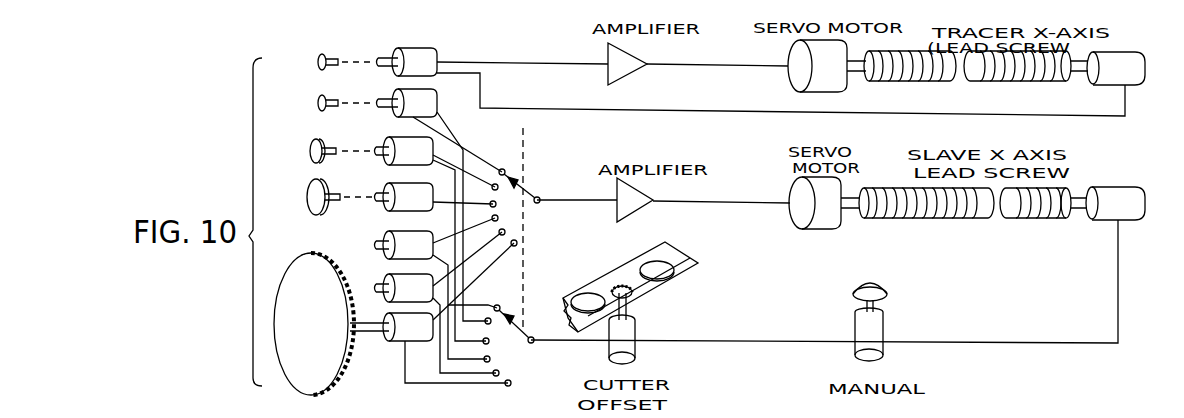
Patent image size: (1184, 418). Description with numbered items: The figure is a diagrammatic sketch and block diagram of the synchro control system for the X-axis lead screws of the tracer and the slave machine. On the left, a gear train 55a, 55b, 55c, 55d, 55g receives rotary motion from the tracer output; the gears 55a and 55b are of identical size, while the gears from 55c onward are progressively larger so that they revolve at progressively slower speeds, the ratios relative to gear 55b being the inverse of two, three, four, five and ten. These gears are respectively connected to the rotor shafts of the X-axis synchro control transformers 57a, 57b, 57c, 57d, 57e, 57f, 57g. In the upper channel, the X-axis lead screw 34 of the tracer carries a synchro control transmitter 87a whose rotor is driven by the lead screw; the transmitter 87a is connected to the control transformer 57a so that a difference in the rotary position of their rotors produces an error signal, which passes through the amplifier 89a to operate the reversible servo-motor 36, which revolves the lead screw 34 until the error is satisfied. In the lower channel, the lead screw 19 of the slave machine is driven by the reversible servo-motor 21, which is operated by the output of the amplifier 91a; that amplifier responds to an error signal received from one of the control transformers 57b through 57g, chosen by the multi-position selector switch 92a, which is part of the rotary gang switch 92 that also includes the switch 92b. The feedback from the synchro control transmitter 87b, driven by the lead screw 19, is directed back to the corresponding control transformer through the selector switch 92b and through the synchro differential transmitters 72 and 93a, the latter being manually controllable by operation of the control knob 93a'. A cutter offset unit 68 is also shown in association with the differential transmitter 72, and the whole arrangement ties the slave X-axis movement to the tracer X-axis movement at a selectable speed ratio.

The gear 55a is at (317, 62).
The gear 55b is at (318, 104).
The gear 55c is at (317, 150).
The gear 55d is at (315, 196).
The gear 55g is at (326, 378).
The X-axis synchro control transformer 57a is at (398, 51).
The X-axis synchro control transformer 57b is at (392, 95).
The X-axis synchro control transformer 57c is at (392, 138).
The X-axis synchro control transformer 57d is at (392, 183).
The X-axis synchro control transformer 57e is at (392, 232).
The X-axis synchro control transformer 57f is at (390, 278).
The X-axis synchro control transformer 57g is at (403, 336).
The rotary gang switch 92 is at (504, 166).
The multi-position selector switch 92a is at (531, 192).
The selector switch 92b is at (530, 327).
The amplifier 89a is at (628, 59).
The amplifier 91a is at (635, 206).
The reversible servo-motor 36 is at (807, 82).
The X-axis lead screw 34 is at (1032, 82).
The synchro control transmitter 87a is at (1130, 81).
The reversible servo-motor 21 is at (826, 222).
The lead screw 19 is at (961, 218).
The synchro control transmitter 87b is at (1134, 217).
The cutter offset unit 68 is at (678, 270).
The synchro differential transmitter 72 is at (636, 350).
The synchro differential transmitter 93a is at (895, 334).
The control knob 93a' is at (896, 292).